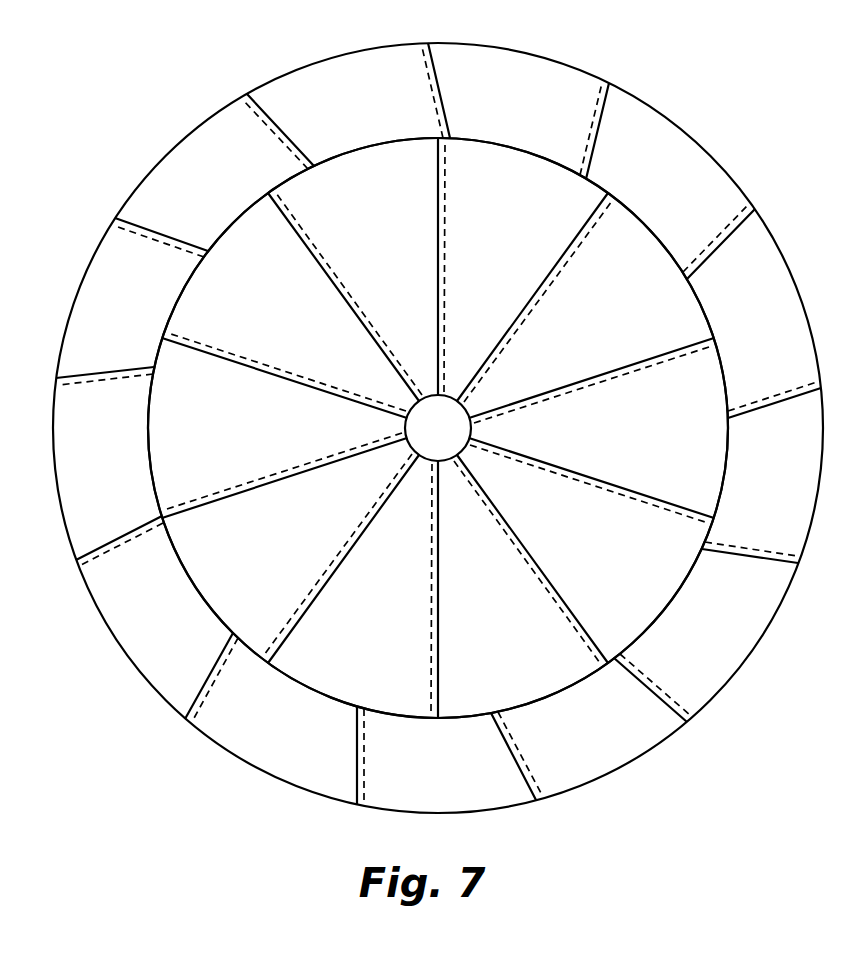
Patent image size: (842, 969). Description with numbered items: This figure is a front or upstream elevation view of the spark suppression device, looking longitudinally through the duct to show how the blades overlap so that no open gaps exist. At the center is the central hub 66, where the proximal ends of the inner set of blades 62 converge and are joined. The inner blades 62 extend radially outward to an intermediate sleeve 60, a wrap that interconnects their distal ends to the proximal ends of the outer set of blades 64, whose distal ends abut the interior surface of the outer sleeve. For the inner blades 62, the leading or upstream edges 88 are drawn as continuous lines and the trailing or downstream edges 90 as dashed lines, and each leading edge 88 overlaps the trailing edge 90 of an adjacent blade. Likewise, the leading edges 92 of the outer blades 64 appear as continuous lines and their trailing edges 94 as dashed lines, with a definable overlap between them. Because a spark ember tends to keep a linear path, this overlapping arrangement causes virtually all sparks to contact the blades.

The intermediate sleeve 60 is at (158, 355).
The inner vanes/blades 62 is at (338, 206).
The outer vanes/blades 64 is at (308, 141).
The central hub 66 is at (373, 383).
The leading edges 88 is at (437, 292).
The trailing edges 90 is at (382, 340).
The leading edges 92 is at (264, 112).
The trailing edges 94 is at (250, 108).